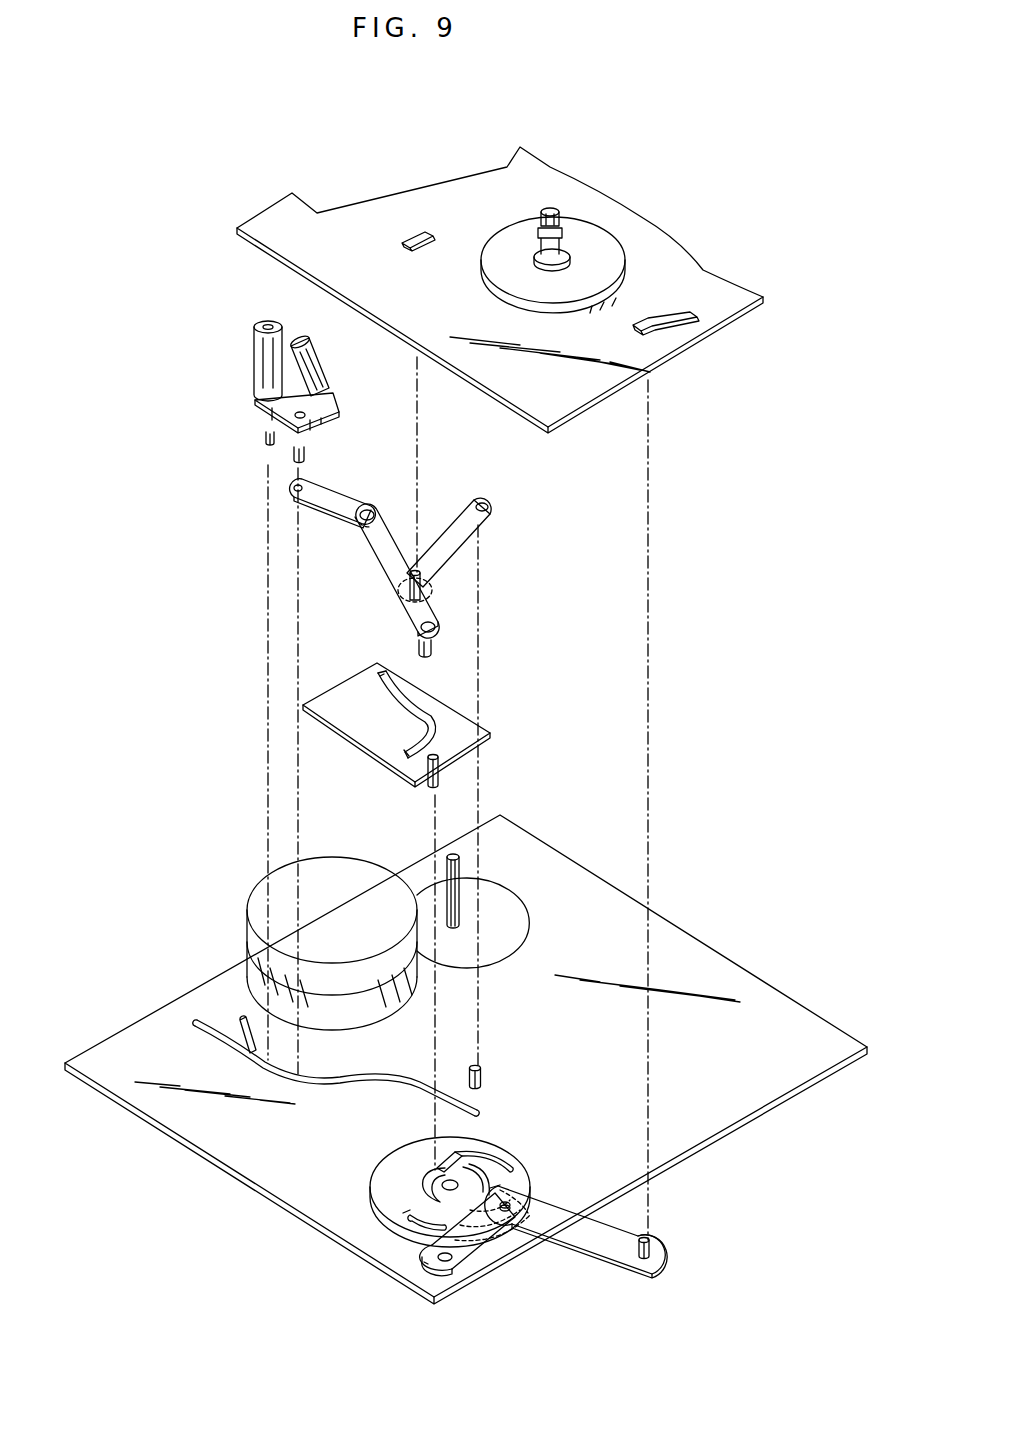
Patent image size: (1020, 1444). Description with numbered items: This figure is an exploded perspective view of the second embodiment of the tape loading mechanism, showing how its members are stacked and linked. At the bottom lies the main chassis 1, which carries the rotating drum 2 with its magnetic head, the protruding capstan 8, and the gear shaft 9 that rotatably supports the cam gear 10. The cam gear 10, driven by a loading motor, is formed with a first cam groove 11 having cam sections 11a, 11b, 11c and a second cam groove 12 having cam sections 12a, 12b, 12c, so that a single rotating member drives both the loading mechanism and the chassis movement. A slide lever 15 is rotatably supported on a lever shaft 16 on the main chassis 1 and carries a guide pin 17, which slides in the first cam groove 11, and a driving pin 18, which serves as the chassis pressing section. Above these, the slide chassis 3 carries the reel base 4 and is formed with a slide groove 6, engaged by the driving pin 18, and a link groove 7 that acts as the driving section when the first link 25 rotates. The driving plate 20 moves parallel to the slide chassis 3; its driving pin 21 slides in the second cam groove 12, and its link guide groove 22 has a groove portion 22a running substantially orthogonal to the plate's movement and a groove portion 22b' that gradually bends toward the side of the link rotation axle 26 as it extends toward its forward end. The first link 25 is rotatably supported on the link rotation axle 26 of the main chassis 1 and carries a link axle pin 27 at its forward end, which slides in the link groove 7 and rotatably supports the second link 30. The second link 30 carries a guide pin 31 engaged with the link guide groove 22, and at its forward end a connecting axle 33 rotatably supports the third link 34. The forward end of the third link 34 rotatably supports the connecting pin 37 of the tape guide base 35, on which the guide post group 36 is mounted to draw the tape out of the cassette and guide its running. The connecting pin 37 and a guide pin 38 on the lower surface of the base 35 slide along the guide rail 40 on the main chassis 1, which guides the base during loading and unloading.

The main chassis 1 is at (718, 967).
The rotating drum 2 is at (258, 913).
The slide chassis 3 is at (680, 253).
The reel base 4 is at (588, 240).
The slide groove 6 is at (672, 332).
The link groove 7 is at (417, 228).
The capstan 8 is at (460, 868).
The gear shaft 9 is at (403, 1213).
The cam gear 10 is at (427, 1223).
The first cam groove 11 is at (457, 1224).
The cam section 11a is at (425, 1262).
The cam section 11b is at (500, 1185).
The cam section 11c is at (480, 1170).
The second cam groove 12 is at (405, 1183).
The cam section 12a is at (487, 1142).
The cam section 12b is at (447, 1158).
The cam section 12c is at (420, 1177).
The slide lever 15 is at (606, 1252).
The lever shaft 16 is at (452, 1257).
The guide pin 17 is at (507, 1208).
The driving pin 18 is at (657, 1252).
The driving plate 20 is at (359, 743).
The driving pin 21 is at (442, 778).
The link guide groove 22 is at (309, 747).
The groove portion 22a is at (412, 753).
The groove portion 22b' is at (283, 704).
The first link 25 is at (463, 538).
The link rotation axle 26 is at (483, 1078).
The link axle pin 27 is at (440, 583).
The second link 30 is at (381, 583).
The guide pin 31 is at (420, 645).
The connecting axle 33 is at (357, 523).
The third link 34 is at (323, 515).
The tape guide base 35 is at (327, 400).
The guide post group 36 is at (262, 362).
The connecting pin 37 is at (307, 452).
The guide pin 38 is at (263, 437).
The guide rail 40 is at (207, 1043).